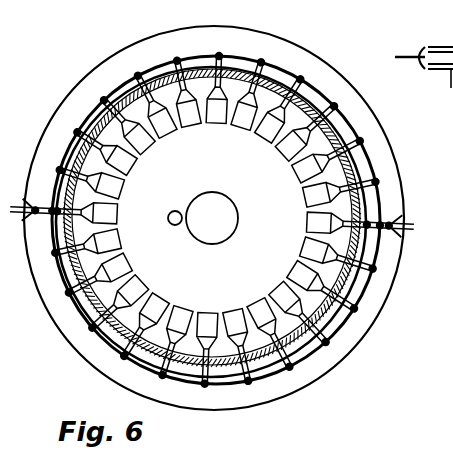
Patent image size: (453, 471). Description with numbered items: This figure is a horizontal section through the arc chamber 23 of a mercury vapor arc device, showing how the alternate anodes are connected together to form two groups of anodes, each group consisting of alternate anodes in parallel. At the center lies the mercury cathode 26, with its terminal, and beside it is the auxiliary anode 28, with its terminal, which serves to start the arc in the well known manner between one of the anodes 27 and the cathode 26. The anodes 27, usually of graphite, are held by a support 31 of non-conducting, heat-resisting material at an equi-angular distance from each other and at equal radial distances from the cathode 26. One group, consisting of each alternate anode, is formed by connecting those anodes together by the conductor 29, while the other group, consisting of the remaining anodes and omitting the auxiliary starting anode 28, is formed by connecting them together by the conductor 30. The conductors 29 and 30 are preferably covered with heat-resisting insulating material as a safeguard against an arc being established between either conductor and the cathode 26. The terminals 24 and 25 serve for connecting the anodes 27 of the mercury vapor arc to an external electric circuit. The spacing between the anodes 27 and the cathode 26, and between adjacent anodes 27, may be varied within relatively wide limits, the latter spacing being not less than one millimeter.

The arc chamber 23 is at (121, 51).
The terminal 24 is at (15, 207).
The terminal 25 is at (398, 230).
The mercury cathode 26 is at (238, 228).
The anodes 27 is at (247, 303).
The auxiliary anode 28 is at (171, 223).
The conductor 29 is at (84, 99).
The conductor 30 is at (450, 85).
The support 31 is at (48, 330).